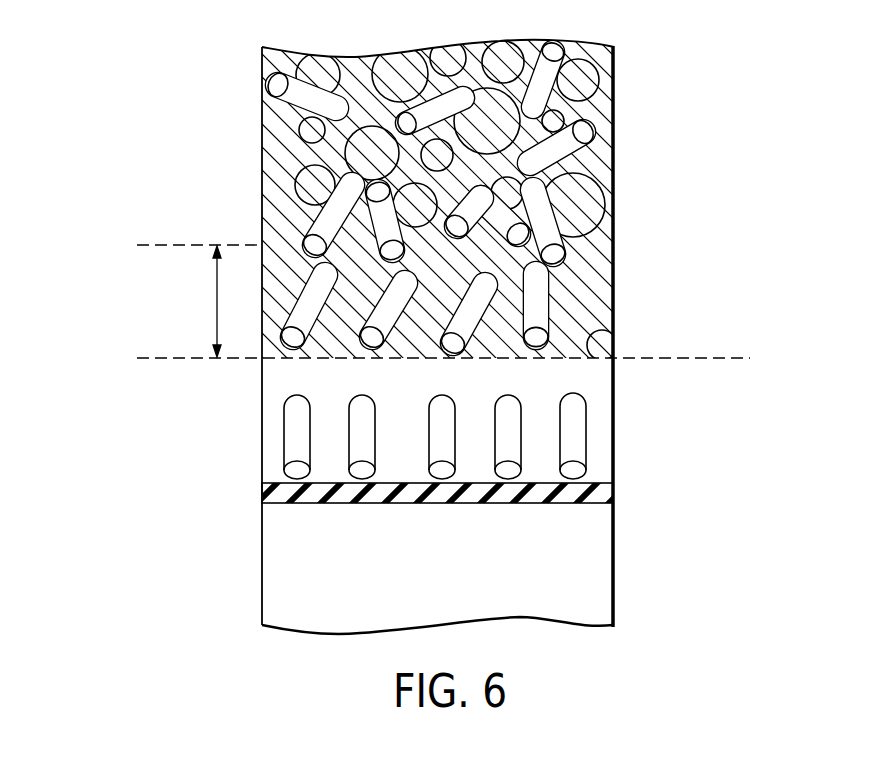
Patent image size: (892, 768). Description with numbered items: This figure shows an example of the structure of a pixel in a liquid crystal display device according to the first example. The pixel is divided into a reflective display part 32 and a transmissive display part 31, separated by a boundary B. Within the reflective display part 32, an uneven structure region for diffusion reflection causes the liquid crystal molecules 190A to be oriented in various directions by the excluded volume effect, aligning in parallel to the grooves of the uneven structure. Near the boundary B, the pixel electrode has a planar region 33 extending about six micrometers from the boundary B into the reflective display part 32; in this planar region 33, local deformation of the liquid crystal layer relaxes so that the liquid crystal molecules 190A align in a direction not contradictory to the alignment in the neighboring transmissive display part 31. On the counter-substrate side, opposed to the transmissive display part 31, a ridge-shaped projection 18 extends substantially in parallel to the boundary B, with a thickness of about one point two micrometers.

The reflective display part 32 is at (733, 358).
The transmissive display part 31 is at (513, 495).
The planar region 33 is at (138, 245).
The boundary B is at (600, 339).
The liquid crystal molecules 190A is at (360, 394).
The ridge-shaped projection 18 is at (506, 504).